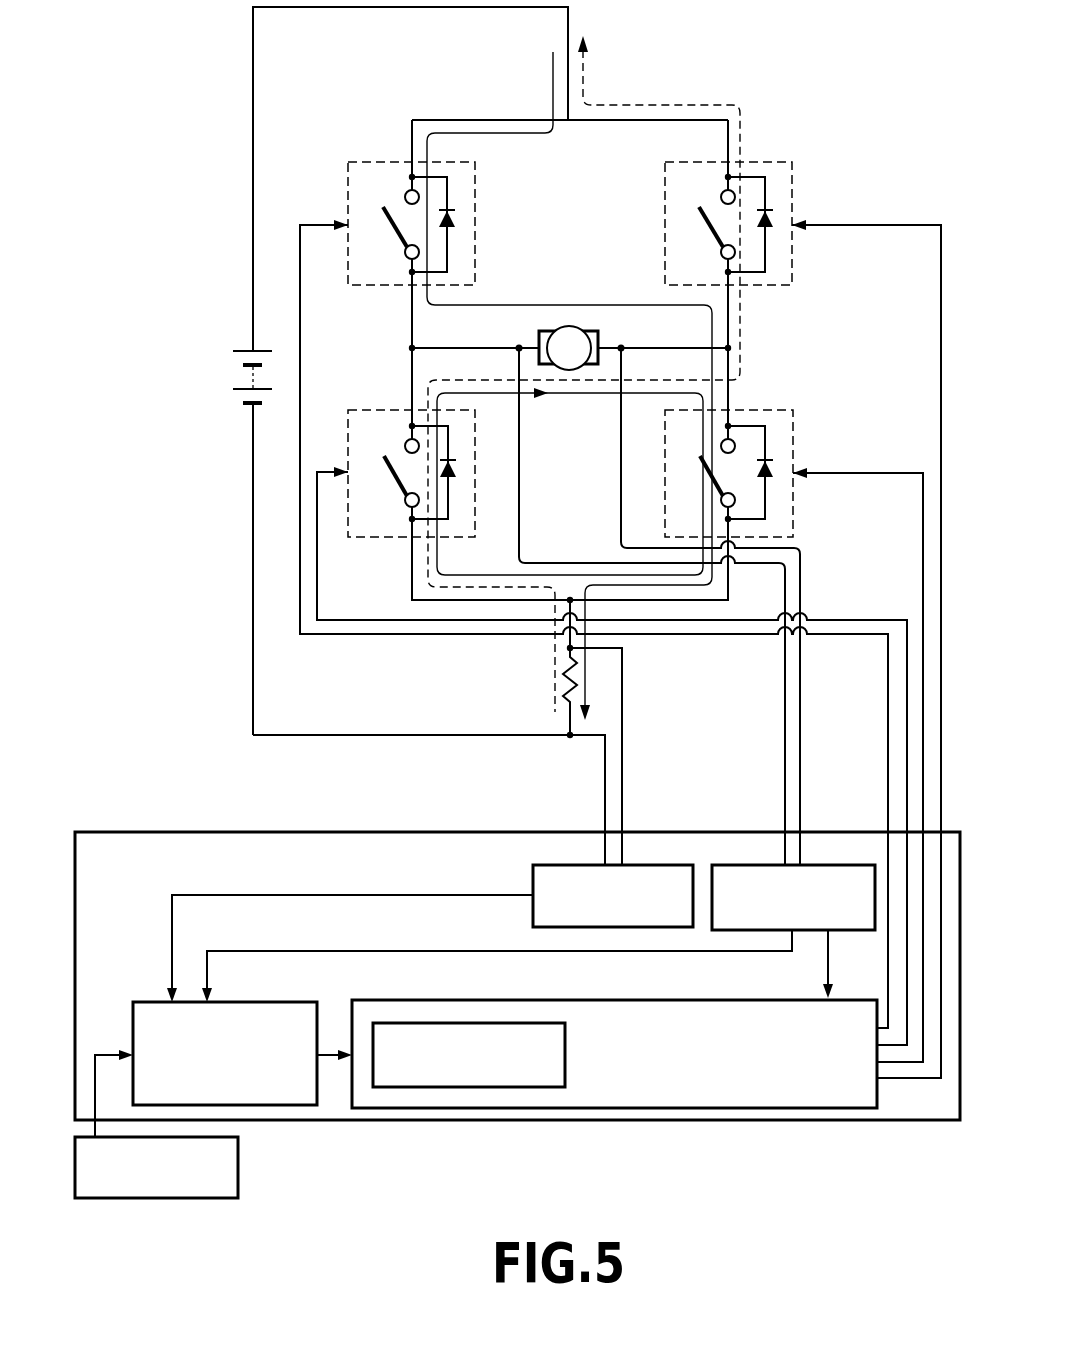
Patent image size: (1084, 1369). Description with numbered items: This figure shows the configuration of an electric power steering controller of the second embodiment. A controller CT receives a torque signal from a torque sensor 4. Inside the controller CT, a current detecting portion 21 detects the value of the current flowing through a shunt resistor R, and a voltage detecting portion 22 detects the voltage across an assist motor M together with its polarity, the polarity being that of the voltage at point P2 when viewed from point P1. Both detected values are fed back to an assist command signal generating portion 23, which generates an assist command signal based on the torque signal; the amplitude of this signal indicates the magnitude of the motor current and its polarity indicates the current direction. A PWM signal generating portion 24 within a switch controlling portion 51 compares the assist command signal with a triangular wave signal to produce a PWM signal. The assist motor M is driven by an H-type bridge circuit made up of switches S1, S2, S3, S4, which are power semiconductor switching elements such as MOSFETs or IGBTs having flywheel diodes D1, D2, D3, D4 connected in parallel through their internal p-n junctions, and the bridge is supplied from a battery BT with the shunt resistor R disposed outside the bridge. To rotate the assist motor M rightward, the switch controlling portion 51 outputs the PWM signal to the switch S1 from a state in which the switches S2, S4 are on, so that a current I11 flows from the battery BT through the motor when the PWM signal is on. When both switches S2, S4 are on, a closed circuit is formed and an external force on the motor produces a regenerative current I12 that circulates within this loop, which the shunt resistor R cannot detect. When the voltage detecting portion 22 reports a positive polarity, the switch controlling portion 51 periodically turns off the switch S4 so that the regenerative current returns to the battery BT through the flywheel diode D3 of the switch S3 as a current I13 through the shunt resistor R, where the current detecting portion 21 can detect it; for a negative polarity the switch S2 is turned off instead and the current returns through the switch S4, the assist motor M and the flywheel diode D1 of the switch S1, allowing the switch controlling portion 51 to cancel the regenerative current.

The battery BT is at (243, 351).
The switch S1 is at (368, 158).
The switch S2 is at (368, 408).
The switch S3 is at (762, 160).
The switch S4 is at (762, 408).
The flywheel diode D1 is at (452, 212).
The flywheel diode D2 is at (456, 463).
The flywheel diode D3 is at (770, 212).
The flywheel diode D4 is at (772, 464).
The assist motor M is at (568, 326).
The point P1 is at (518, 340).
The point P2 is at (621, 340).
The current I11 is at (551, 84).
The current I12 is at (500, 393).
The current I13 is at (586, 84).
The shunt resistor R is at (560, 689).
The controller CT is at (290, 832).
The current detecting portion 21 is at (668, 865).
The voltage detecting portion 22 is at (852, 865).
The assist command signal generating portion 23 is at (242, 1002).
The switch controlling portion 51 is at (437, 1000).
The PWM signal generating portion 24 is at (565, 1062).
The torque sensor 4 is at (238, 1185).